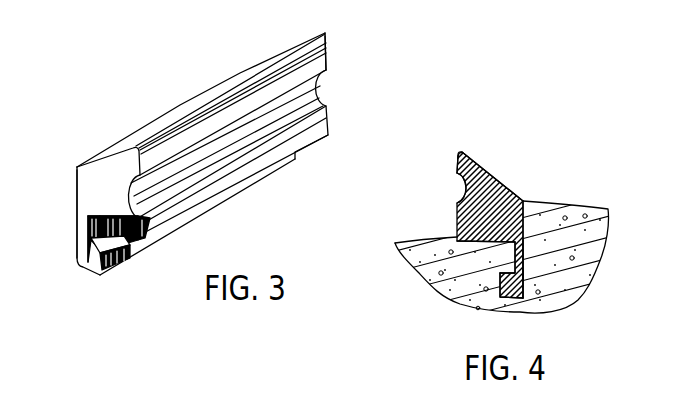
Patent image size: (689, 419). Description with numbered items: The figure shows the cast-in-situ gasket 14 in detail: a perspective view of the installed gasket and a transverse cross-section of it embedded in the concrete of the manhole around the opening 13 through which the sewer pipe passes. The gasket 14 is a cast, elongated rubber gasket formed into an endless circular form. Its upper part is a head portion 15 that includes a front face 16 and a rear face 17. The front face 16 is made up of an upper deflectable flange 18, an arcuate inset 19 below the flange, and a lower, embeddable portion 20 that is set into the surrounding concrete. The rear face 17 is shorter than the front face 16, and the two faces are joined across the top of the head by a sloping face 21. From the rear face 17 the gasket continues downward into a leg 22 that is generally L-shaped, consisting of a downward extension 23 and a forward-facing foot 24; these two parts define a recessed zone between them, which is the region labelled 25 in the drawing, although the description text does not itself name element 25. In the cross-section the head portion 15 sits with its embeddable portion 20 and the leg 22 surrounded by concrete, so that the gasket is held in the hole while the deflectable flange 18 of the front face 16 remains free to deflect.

In FIG. 4, the opening 13 is at (432, 238).
In FIG. 3, the cast-in-situ gasket 14 is at (140, 124).
In FIG. 3, the head portion 15 is at (328, 43).
In FIG. 4, the head portion 15 is at (519, 167).
In FIG. 3, the front face 16 is at (319, 65).
In FIG. 4, the front face 16 is at (455, 169).
In FIG. 3, the rear face 17 is at (77, 193).
In FIG. 4, the rear face 17 is at (528, 230).
In FIG. 3, the upper deflectable flange 18 is at (270, 67).
In FIG. 4, the upper deflectable flange 18 is at (458, 153).
In FIG. 3, the arcuate inset 19 is at (300, 107).
In FIG. 4, the arcuate inset 19 is at (462, 198).
In FIG. 3, the lower embeddable portion 20 is at (329, 137).
In FIG. 4, the lower embeddable portion 20 is at (500, 252).
In FIG. 3, the sloping face 21 is at (230, 80).
In FIG. 4, the sloping face 21 is at (485, 172).
In FIG. 3, the leg 22 is at (87, 207).
In FIG. 4, the leg 22 is at (525, 259).
In FIG. 3, the downward extension 23 is at (85, 237).
In FIG. 4, the downward extension 23 is at (550, 288).
In FIG. 3, the forward-facing foot 24 is at (117, 266).
In FIG. 4, the forward-facing foot 24 is at (498, 298).
In FIG. 3, the inner wall / notch 25 is at (130, 252).
In FIG. 4, the inner wall / notch 25 is at (508, 270).